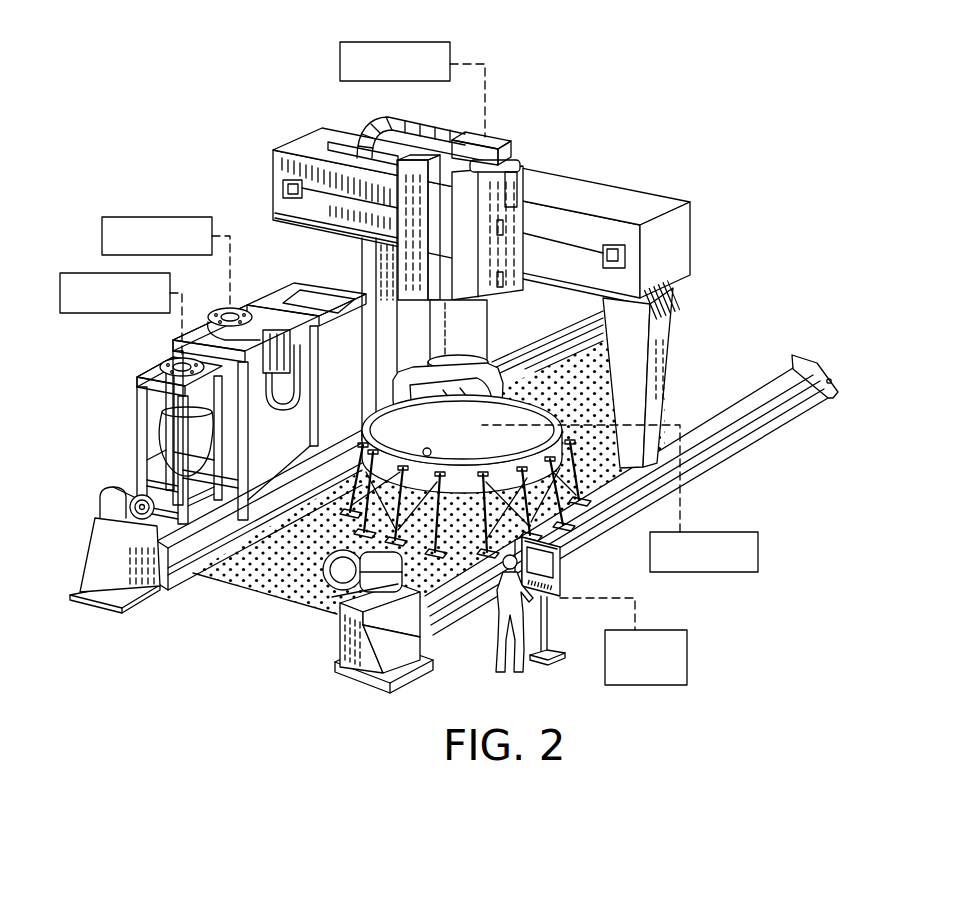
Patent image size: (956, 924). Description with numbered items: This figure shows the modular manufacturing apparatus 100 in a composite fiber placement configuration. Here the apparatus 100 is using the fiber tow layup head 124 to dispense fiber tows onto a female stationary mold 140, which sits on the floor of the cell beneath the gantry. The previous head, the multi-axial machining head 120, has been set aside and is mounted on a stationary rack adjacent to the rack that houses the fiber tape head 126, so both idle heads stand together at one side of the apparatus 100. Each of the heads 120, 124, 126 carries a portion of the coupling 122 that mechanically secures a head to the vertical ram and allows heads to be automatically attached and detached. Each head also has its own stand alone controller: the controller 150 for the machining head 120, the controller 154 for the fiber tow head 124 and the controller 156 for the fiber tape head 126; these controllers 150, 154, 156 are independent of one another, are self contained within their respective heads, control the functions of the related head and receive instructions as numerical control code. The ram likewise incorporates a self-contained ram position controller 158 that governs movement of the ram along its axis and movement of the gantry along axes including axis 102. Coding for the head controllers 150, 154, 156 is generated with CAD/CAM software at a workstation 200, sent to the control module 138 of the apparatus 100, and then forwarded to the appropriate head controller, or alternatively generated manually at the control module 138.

The modular manufacturing apparatus 100 is at (754, 206).
The axis 102 is at (577, 143).
The multi-axial machining head 120 is at (160, 347).
The coupling 122 is at (152, 363).
The fiber tow layup head 124 is at (506, 341).
The fiber tape head 126 is at (251, 297).
The control module 138 is at (564, 583).
The female stationary mold 140 is at (562, 416).
The stand alone controller 150 is at (77, 273).
The stand alone controller 154 is at (742, 532).
The stand alone controller 156 is at (199, 217).
The ram position controller 158 is at (452, 43).
The workstation 200 is at (707, 630).